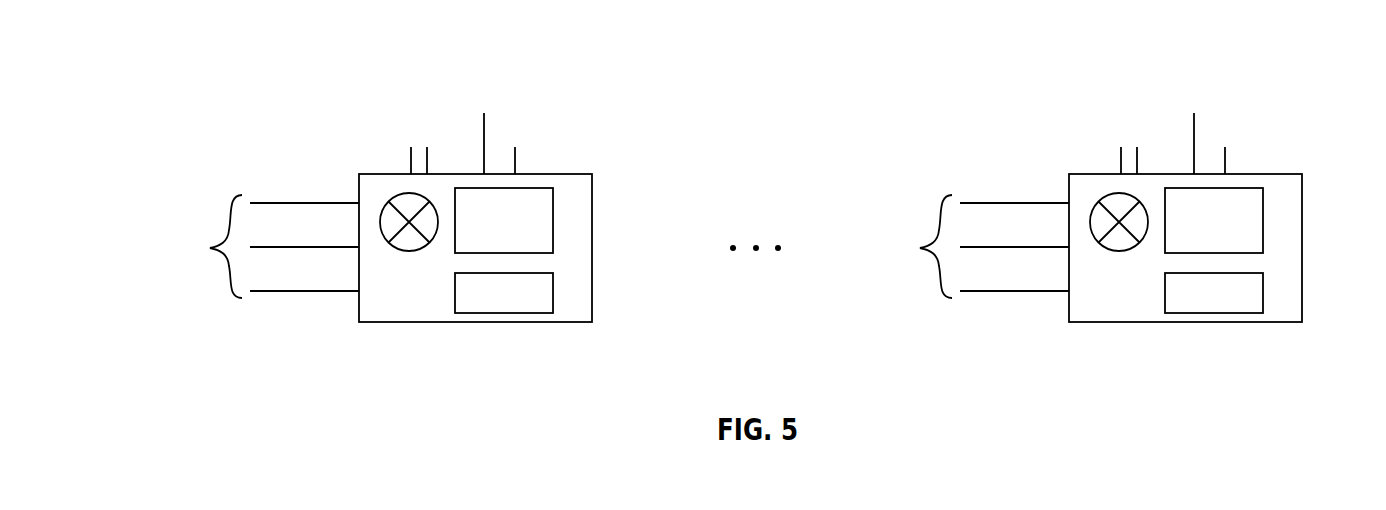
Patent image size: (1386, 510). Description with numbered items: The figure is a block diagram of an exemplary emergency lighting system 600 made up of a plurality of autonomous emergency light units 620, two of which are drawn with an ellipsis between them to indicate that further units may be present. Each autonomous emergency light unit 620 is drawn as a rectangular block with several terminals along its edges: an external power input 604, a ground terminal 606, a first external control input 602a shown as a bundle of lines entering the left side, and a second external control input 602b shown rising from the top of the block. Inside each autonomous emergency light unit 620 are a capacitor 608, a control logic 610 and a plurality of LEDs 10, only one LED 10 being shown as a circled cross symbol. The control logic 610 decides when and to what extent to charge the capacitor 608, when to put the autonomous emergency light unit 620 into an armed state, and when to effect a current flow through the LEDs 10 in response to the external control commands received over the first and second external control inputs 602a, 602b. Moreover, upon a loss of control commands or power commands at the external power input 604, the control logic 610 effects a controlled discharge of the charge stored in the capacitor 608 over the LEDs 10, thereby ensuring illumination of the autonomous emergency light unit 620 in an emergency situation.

The emergency lighting system 600 is at (188, 67).
The first external control input 602a is at (607, 246).
The second external control input 602b is at (480, 128).
The external power input 604 is at (419, 157).
The ground terminal 606 is at (519, 160).
The capacitor 608 is at (553, 293).
The control logic 610 is at (553, 220).
The LED 10 is at (409, 251).
The autonomous emergency light unit 620 is at (409, 323).